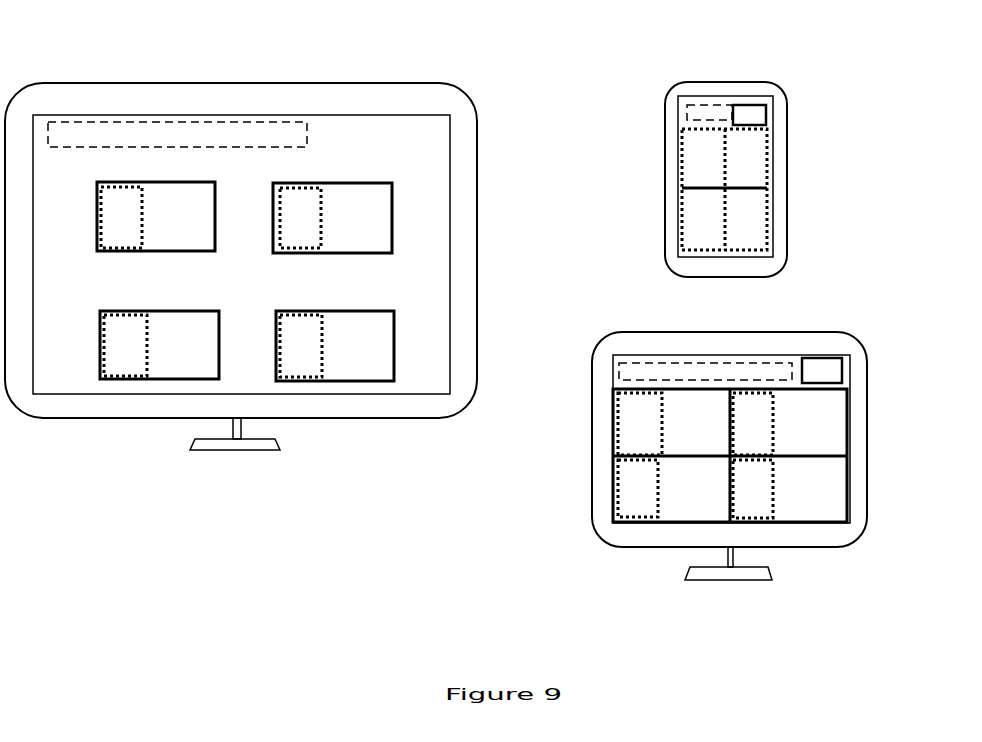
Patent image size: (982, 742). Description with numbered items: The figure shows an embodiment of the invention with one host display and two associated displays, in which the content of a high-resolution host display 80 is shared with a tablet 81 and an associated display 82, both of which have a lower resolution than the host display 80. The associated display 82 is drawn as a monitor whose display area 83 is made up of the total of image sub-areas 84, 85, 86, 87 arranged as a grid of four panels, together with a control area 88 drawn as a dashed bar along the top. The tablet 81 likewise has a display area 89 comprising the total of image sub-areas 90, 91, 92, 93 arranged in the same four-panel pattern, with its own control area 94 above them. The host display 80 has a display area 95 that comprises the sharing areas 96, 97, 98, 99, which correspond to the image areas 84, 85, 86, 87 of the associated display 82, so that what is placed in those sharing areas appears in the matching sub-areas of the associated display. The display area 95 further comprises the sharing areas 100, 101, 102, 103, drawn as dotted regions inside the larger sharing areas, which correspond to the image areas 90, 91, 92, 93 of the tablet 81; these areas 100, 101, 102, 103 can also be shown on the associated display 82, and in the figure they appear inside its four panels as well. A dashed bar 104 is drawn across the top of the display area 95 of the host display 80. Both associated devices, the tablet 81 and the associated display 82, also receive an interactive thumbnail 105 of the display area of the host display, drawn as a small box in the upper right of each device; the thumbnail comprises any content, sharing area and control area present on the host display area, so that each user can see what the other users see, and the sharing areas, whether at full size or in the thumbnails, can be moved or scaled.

The host display 80 is at (49, 83).
The tablet 81 is at (752, 84).
The associated display 82 is at (810, 332).
The display area 83 is at (850, 370).
The image sub-area 84 is at (613, 422).
The image sub-area 85 is at (613, 491).
The image sub-area 86 is at (847, 417).
The image area 87 is at (847, 483).
The control area 88 is at (619, 373).
The display area 89 is at (769, 110).
The image sub-area 90 is at (682, 146).
The image sub-area 91 is at (682, 220).
The image sub-area 92 is at (767, 157).
The image sub-area 93 is at (767, 222).
The control area 94 is at (687, 113).
The display area 95 is at (452, 165).
The sharing area 96 is at (97, 198).
The sharing area 97 is at (100, 313).
The sharing area 98 is at (273, 193).
The sharing area 99 is at (276, 316).
The sharing area 100 is at (166, 207).
The sharing area 101 is at (147, 325).
The sharing area 102 is at (321, 208).
The sharing area 103 is at (322, 329).
The dashed header bar 104 is at (307, 141).
The interactive thumbnail 105 is at (758, 106).